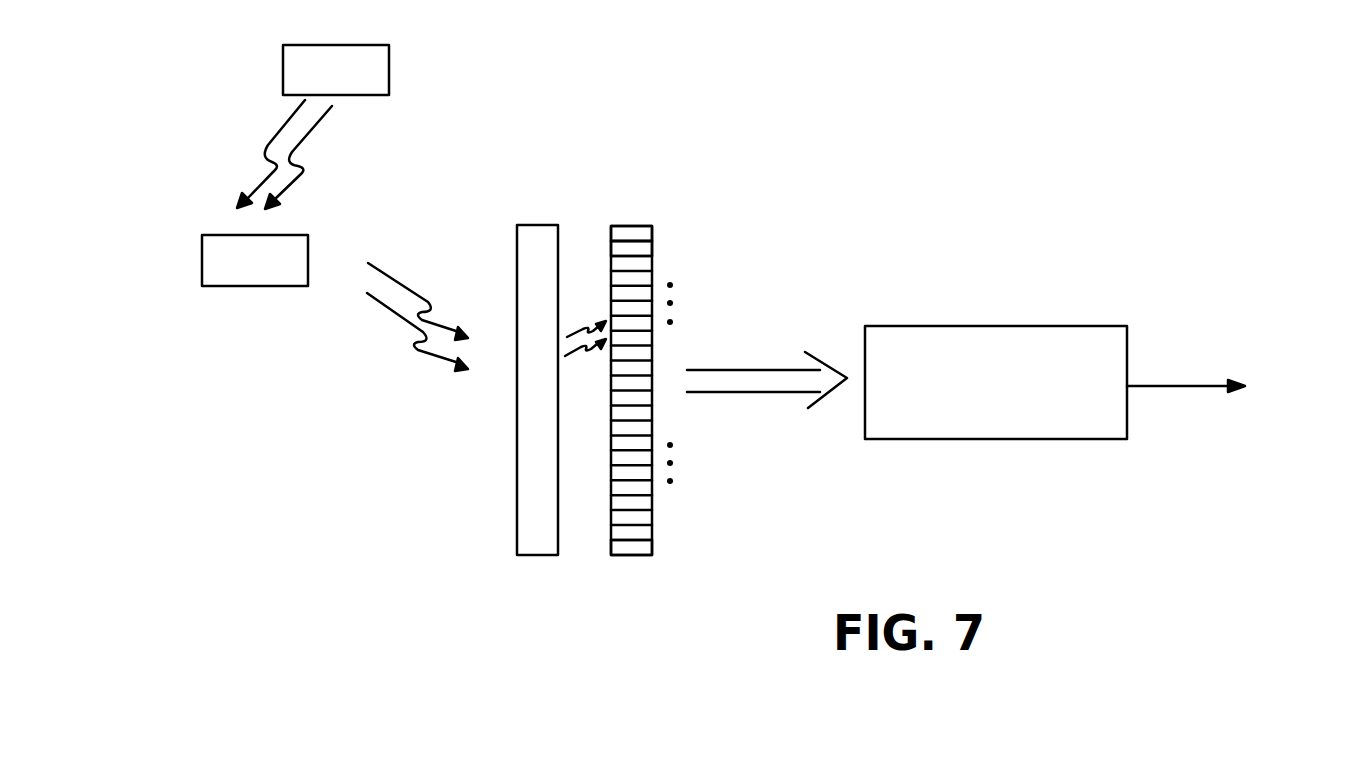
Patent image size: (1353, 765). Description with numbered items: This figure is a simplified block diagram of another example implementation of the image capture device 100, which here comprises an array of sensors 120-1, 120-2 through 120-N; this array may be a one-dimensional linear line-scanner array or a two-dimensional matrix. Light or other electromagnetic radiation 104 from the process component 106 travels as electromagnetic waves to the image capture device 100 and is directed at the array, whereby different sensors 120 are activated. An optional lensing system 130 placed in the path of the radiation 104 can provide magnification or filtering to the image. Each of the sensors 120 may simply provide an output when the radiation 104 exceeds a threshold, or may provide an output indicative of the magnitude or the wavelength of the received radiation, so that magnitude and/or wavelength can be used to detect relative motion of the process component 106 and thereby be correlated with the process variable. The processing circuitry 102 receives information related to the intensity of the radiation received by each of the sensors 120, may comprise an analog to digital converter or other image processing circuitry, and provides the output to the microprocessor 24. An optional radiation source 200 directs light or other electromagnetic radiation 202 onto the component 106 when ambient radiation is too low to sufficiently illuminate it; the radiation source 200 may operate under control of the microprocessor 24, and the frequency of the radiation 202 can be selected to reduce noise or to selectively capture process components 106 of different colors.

The radiation source 200 is at (336, 70).
The electromagnetic radiation 202 is at (267, 146).
The process component 106 is at (255, 260).
The electromagnetic radiation 104 is at (386, 274).
The lensing system 130 is at (540, 225).
The image capture device 100 is at (645, 205).
The sensor 120-1 is at (653, 233).
The sensor 120-2 is at (653, 250).
The sensor 120-N is at (653, 548).
The sensors 120 is at (901, 117).
The processing circuitry 102 is at (992, 326).
The microprocessor 24 is at (1230, 385).